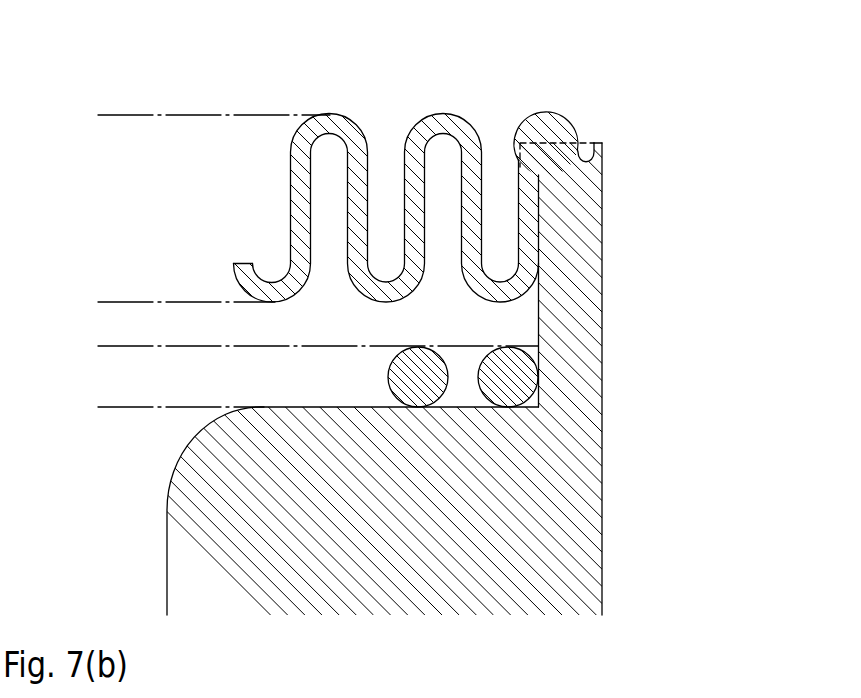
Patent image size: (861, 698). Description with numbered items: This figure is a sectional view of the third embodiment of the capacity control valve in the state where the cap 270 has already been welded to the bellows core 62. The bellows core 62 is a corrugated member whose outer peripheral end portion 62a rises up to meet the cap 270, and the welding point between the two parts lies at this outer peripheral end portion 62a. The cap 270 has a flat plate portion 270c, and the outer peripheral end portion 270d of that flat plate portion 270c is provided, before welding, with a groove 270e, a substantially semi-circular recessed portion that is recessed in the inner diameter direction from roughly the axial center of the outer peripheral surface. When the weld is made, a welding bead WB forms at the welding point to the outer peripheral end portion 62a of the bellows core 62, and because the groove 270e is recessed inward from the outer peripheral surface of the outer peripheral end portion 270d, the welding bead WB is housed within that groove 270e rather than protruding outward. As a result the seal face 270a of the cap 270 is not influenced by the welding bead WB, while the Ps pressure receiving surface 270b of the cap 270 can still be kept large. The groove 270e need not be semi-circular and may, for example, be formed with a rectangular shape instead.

The bellows core 62 is at (325, 108).
The outer peripheral end portion 62a is at (503, 178).
The welding bead WB is at (547, 128).
The outer peripheral end portion 270d is at (570, 122).
The groove 270e is at (580, 145).
The cap 270 is at (628, 458).
The seal face 270a is at (603, 222).
The Ps pressure receiving surface 270b is at (603, 520).
The flat plate portion 270c is at (590, 340).